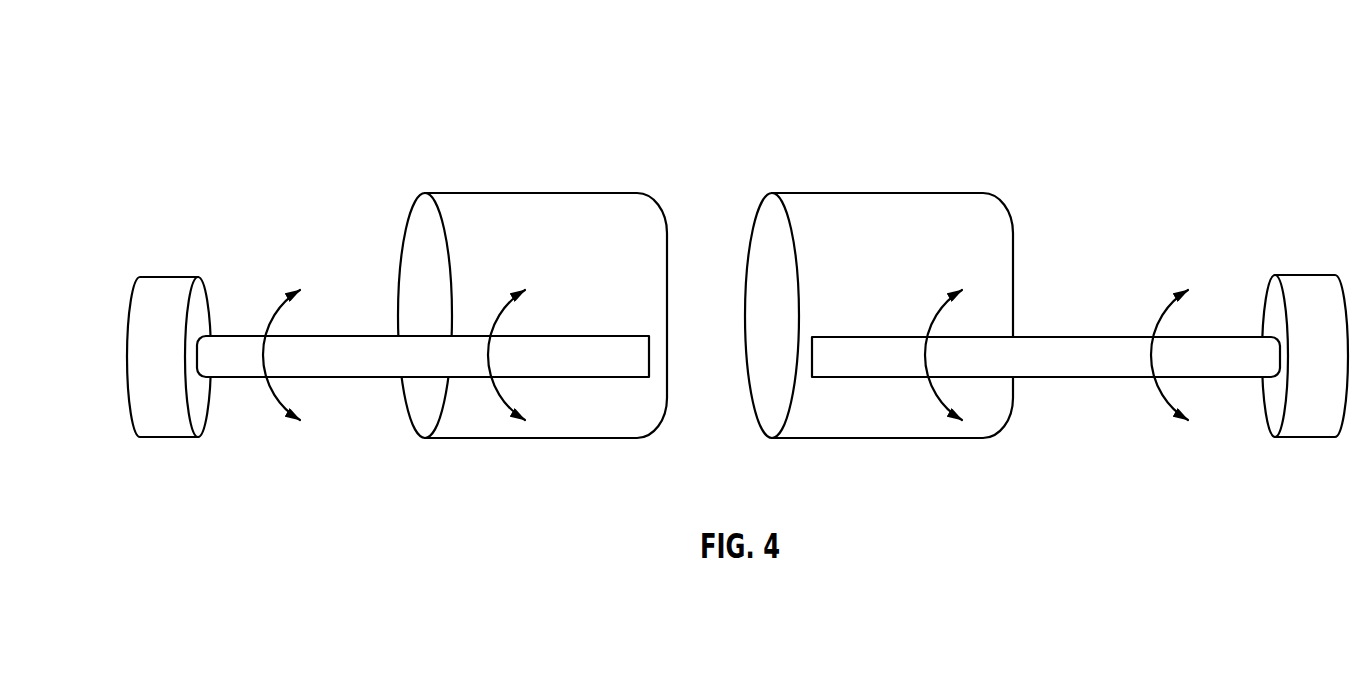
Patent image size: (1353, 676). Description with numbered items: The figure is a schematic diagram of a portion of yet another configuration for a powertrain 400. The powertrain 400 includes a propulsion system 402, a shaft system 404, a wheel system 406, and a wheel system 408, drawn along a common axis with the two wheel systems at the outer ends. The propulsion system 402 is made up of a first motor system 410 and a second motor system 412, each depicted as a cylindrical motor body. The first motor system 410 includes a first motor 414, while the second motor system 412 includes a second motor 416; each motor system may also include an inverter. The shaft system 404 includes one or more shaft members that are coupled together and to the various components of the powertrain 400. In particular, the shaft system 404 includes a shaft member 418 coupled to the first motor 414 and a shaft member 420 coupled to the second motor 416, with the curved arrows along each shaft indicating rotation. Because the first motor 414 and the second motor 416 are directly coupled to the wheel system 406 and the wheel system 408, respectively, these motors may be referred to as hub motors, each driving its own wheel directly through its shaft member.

The powertrain 400 is at (734, 288).
The propulsion system 402 is at (532, 256).
The shaft system 404 is at (365, 330).
The wheel system 406 is at (170, 270).
The wheel system 408 is at (1310, 443).
The first motor system 410 is at (533, 190).
The second motor system 412 is at (879, 190).
The first motor 414 is at (482, 212).
The second motor 416 is at (830, 212).
The shaft member 418 is at (255, 335).
The shaft member 420 is at (1090, 333).